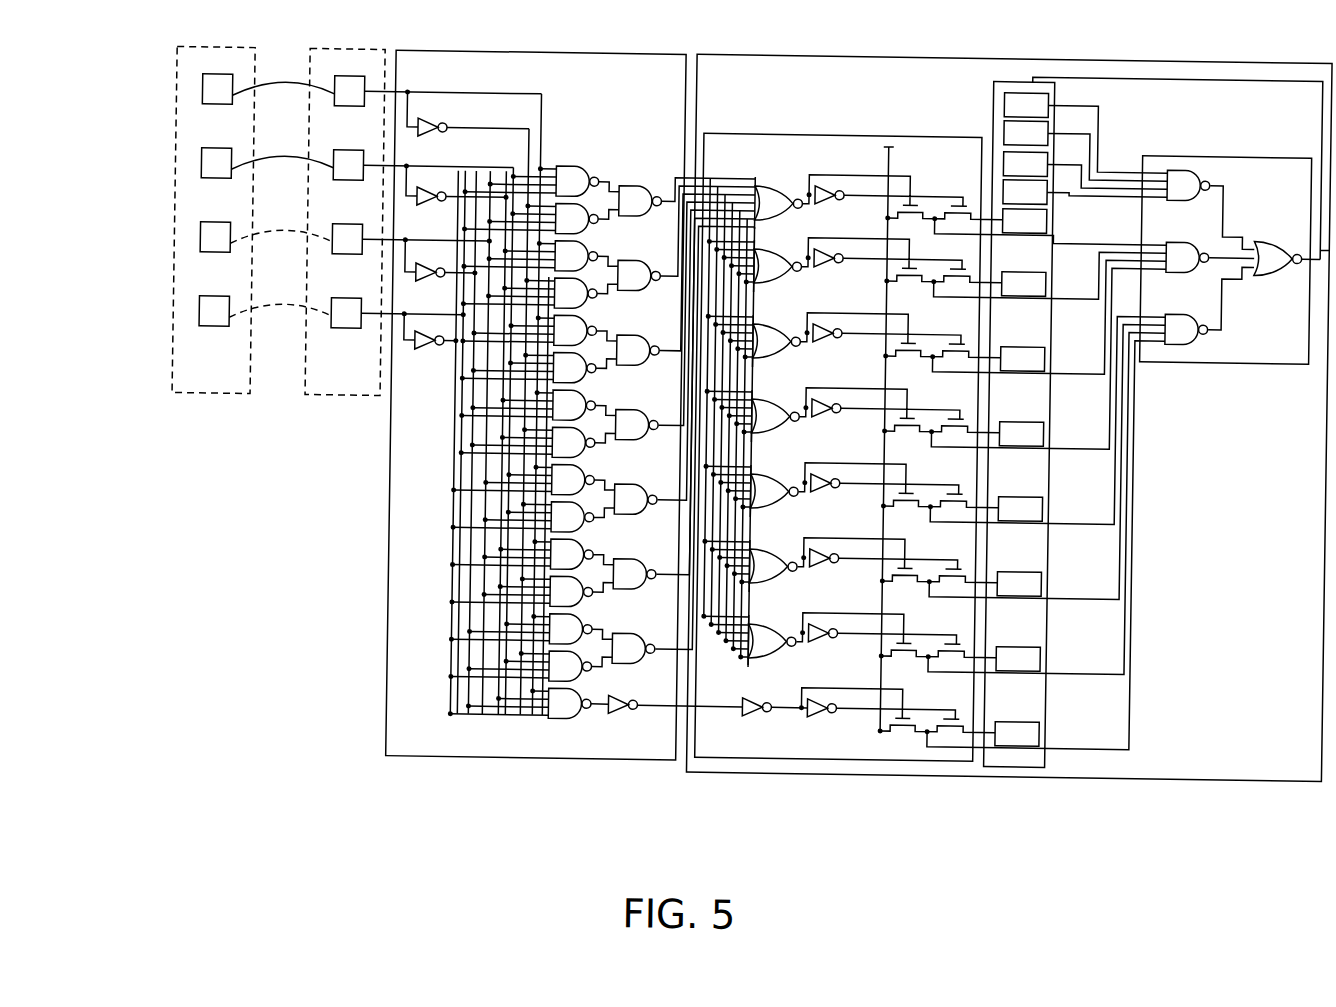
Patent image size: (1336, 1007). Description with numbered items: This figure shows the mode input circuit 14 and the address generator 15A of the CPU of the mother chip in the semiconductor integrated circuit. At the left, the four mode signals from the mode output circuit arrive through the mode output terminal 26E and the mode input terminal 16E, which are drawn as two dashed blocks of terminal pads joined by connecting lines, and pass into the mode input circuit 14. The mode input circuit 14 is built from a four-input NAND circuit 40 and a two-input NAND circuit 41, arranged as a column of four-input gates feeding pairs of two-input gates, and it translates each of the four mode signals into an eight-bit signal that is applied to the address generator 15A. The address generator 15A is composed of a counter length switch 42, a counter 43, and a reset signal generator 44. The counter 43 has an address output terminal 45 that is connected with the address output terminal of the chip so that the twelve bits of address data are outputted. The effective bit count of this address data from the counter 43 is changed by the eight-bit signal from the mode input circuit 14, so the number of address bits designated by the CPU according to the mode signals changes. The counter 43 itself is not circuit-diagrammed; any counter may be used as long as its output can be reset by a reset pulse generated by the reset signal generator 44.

The mode output terminal 26E is at (200, 401).
The mode input terminal 16E is at (340, 401).
The mode input circuit 14 is at (555, 429).
The 4-input NAND circuit 40 is at (560, 169).
The 2-input NAND circuit 41 is at (625, 187).
The address generator 15A is at (984, 441).
The counter length switch 42 is at (745, 134).
The counter 43 is at (989, 112).
The reset signal generator 44 is at (1215, 150).
The address output terminal 45 is at (1057, 97).